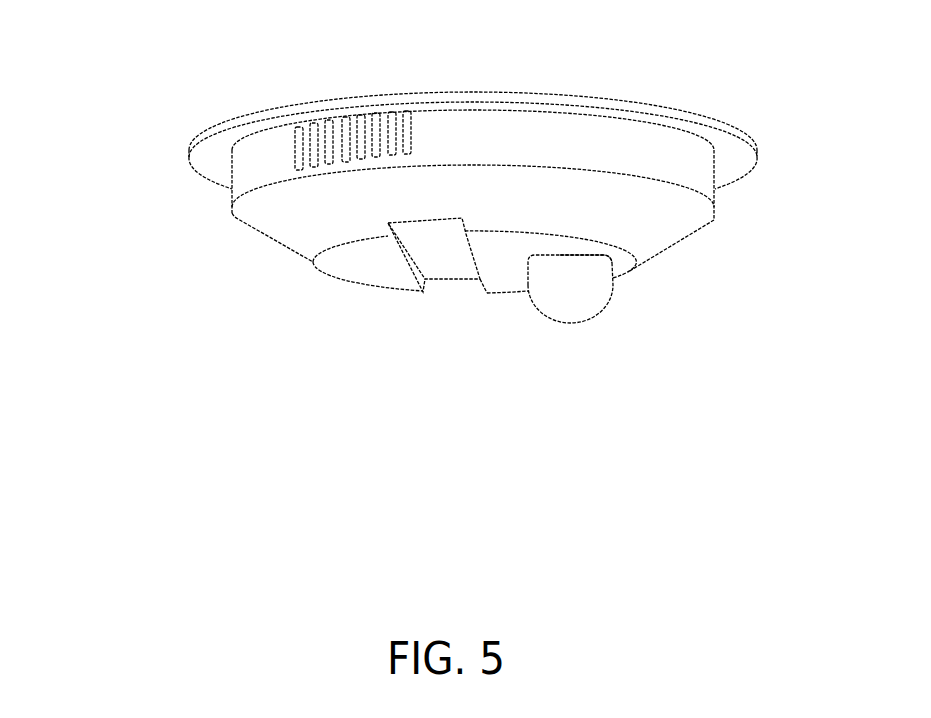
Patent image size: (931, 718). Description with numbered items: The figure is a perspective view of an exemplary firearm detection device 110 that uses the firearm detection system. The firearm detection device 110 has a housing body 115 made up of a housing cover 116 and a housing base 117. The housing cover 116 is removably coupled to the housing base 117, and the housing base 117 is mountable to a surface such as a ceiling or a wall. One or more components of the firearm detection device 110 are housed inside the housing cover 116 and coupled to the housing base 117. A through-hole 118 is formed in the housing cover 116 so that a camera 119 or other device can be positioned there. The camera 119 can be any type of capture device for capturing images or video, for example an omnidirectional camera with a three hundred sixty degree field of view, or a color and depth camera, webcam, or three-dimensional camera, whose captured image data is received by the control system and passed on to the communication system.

The firearm detection device 110 is at (141, 58).
The housing body 115 is at (202, 291).
The housing cover 116 is at (202, 220).
The housing base 117 is at (700, 98).
The through-hole 118 is at (603, 266).
The camera 119 is at (617, 311).